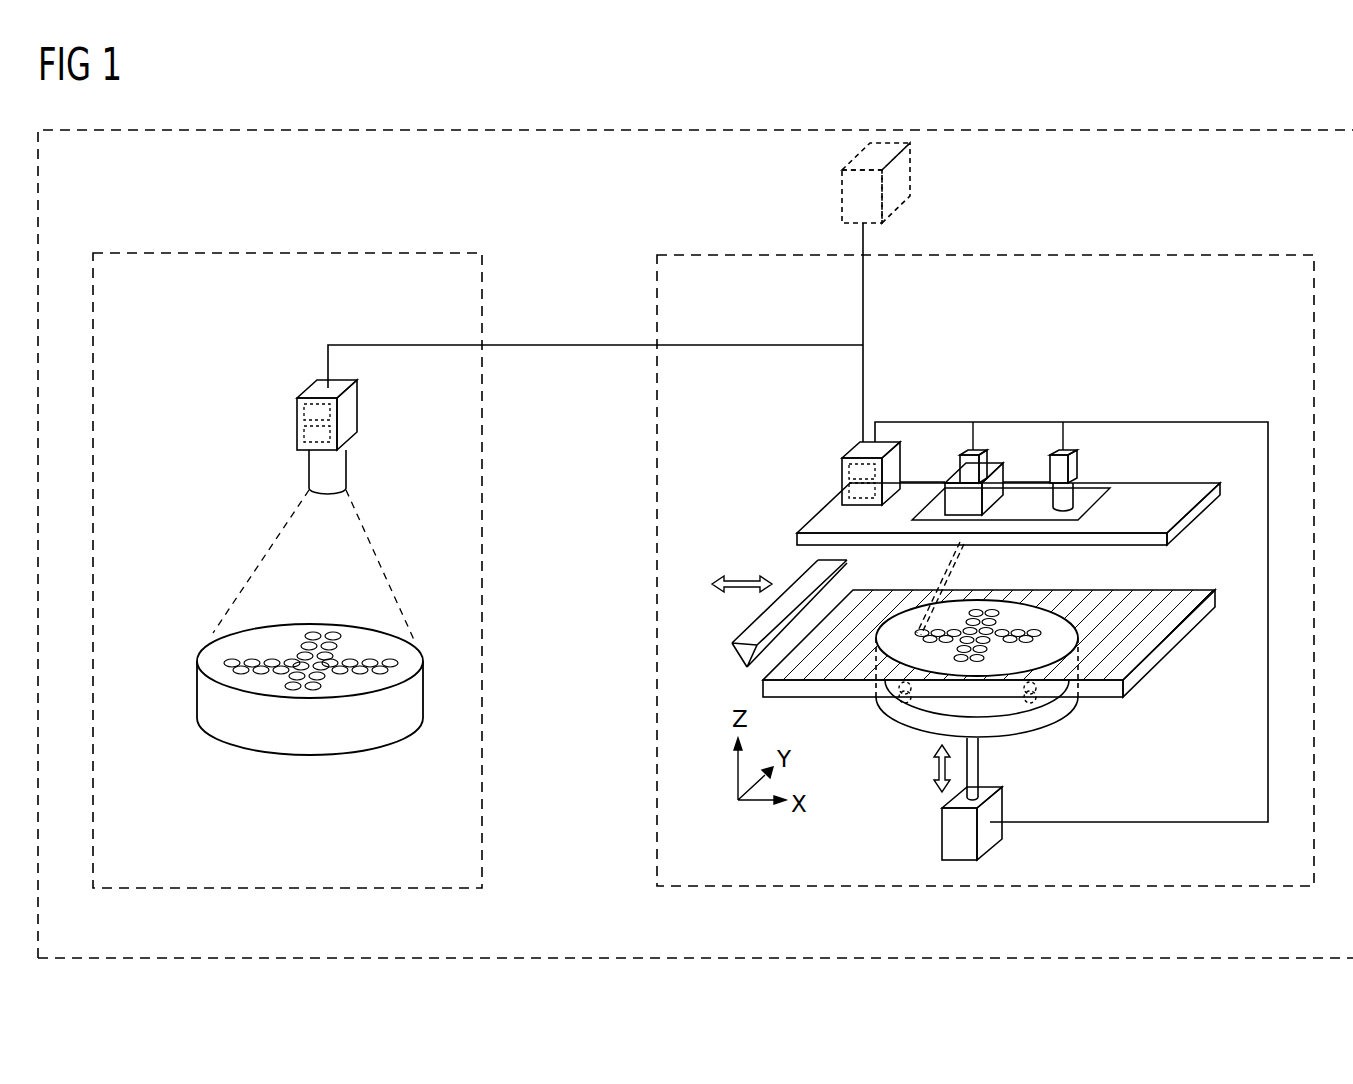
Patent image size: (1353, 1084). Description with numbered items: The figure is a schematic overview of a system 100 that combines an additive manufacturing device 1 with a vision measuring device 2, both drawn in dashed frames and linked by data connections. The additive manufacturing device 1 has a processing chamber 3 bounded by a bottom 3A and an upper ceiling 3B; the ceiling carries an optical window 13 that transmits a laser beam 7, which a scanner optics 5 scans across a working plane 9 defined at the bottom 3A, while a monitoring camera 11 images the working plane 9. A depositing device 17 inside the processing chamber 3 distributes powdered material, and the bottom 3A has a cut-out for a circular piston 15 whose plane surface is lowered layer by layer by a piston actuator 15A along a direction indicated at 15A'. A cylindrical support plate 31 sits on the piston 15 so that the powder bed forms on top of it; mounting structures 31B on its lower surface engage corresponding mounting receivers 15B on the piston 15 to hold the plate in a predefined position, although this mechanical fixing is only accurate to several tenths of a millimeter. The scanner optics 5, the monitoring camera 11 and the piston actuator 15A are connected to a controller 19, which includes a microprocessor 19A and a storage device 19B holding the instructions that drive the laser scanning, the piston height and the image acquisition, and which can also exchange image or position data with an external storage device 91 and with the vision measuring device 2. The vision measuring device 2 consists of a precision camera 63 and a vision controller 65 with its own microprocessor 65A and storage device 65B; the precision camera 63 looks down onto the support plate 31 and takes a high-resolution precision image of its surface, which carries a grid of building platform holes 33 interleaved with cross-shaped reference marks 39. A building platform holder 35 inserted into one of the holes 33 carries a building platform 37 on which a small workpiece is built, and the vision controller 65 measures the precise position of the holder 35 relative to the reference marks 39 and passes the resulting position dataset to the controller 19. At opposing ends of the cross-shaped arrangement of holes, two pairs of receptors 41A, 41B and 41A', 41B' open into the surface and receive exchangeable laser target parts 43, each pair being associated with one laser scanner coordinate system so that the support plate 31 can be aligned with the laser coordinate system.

The system 100 is at (692, 129).
The additive manufacturing device 1 is at (1032, 255).
The vision measuring device 2 is at (276, 253).
The external storage device 91 is at (880, 156).
The vision controller 65 is at (293, 398).
The microprocessor 65A is at (312, 412).
The storage device 65B is at (310, 433).
The precision camera 63 is at (318, 470).
The support plate 31 is at (270, 752).
The building platform holes 33 is at (332, 690).
The building platform holder 35 is at (272, 660).
The reference marks 39 is at (300, 645).
The receptor 41A is at (375, 703).
The receptor 41A' is at (429, 626).
The receptor 41B is at (177, 675).
The receptor 41B' is at (205, 619).
The controller 19 is at (910, 442).
The microprocessor 19A is at (846, 472).
The storage device 19B is at (845, 489).
The scanner optics 5 is at (976, 450).
The monitoring camera 11 is at (1067, 450).
The optical window 13 is at (1088, 502).
The processing chamber 3 is at (1026, 578).
The bottom 3A is at (1167, 603).
The upper ceiling 3B is at (1212, 520).
The laser beam 7 is at (948, 557).
The working plane 9 is at (1139, 614).
The building platform 37 is at (984, 628).
The laser target part 43 is at (905, 632).
The depositing device 17 is at (750, 638).
The piston 15 is at (1057, 712).
The piston actuator 15A is at (1006, 799).
The vertical movement 15A' is at (903, 777).
The mounting receiver 15B is at (907, 703).
The mounting structure 31B is at (900, 697).